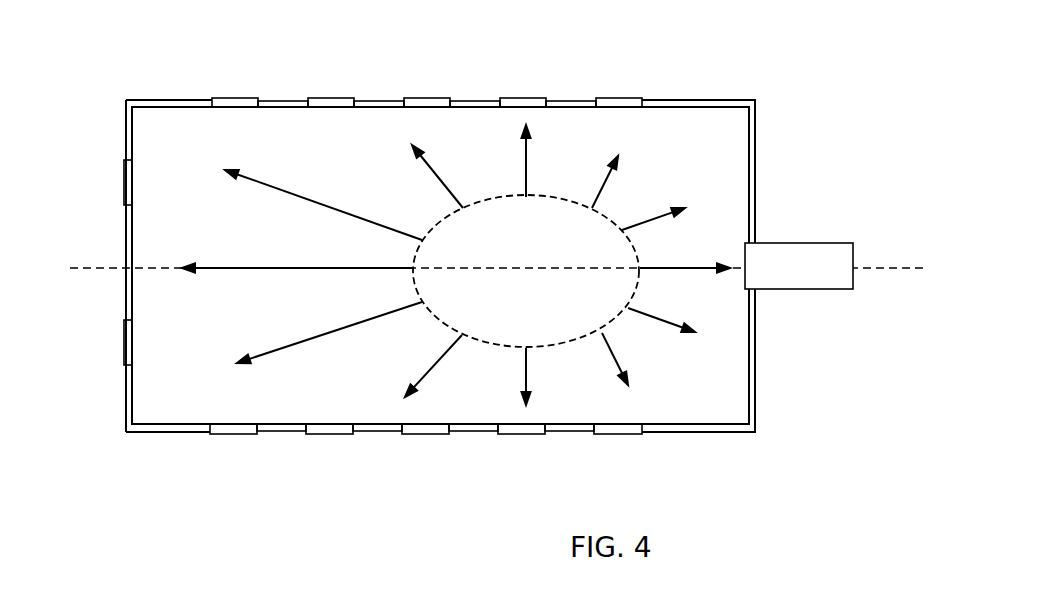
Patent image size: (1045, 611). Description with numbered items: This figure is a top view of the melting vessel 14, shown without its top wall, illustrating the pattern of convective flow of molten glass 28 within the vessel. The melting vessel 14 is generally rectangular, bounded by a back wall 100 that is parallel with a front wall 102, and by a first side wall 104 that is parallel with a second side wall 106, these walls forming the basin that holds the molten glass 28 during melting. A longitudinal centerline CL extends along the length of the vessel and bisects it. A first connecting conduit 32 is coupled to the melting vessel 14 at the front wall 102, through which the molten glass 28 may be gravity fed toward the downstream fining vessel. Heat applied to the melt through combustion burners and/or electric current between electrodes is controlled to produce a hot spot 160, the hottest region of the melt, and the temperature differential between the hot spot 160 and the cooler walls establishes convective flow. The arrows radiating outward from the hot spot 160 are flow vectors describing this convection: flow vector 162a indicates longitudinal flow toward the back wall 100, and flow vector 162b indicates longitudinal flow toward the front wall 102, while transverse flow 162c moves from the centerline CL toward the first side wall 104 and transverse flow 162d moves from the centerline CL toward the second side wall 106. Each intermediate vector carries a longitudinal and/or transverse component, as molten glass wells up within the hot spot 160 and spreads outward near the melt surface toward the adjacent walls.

The melting vessel 14 is at (807, 192).
The molten glass 28 is at (700, 415).
The first connecting conduit 32 is at (808, 290).
The back wall 100 is at (758, 163).
The front wall 102 is at (126, 240).
The first side wall 104 is at (693, 100).
The second side wall 106 is at (177, 433).
The hot spot 160 is at (440, 220).
The flow vector 162a is at (285, 268).
The flow vector 162b is at (672, 270).
The transverse flow 162c is at (528, 160).
The transverse flow 162d is at (523, 365).
The longitudinal centerline CL is at (499, 257).